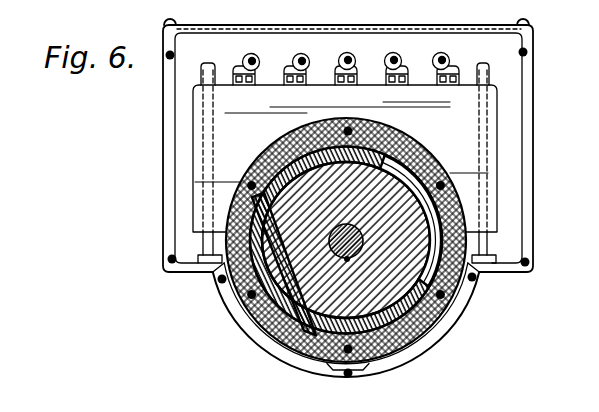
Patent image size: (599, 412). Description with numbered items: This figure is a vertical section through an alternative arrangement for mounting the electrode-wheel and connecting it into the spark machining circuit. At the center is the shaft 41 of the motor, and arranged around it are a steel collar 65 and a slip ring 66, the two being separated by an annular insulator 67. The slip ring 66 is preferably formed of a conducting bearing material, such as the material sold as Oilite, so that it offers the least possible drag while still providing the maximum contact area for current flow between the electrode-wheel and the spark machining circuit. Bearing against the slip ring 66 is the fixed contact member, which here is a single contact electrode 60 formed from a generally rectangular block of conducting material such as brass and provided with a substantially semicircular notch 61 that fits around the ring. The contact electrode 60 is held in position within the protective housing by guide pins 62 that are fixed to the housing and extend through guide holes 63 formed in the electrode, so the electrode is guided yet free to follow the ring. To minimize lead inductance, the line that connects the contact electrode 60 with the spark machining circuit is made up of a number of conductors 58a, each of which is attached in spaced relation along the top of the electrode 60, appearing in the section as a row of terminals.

The shaft 41 is at (363, 236).
The conductors 58a is at (439, 60).
The contact electrode 60 is at (495, 156).
The semicircular notch 61 is at (408, 157).
The guide pins 62 is at (484, 65).
The guide holes 63 is at (488, 106).
The steel collar 65 is at (318, 314).
The slip ring 66 is at (403, 355).
The annular insulator 67 is at (438, 304).